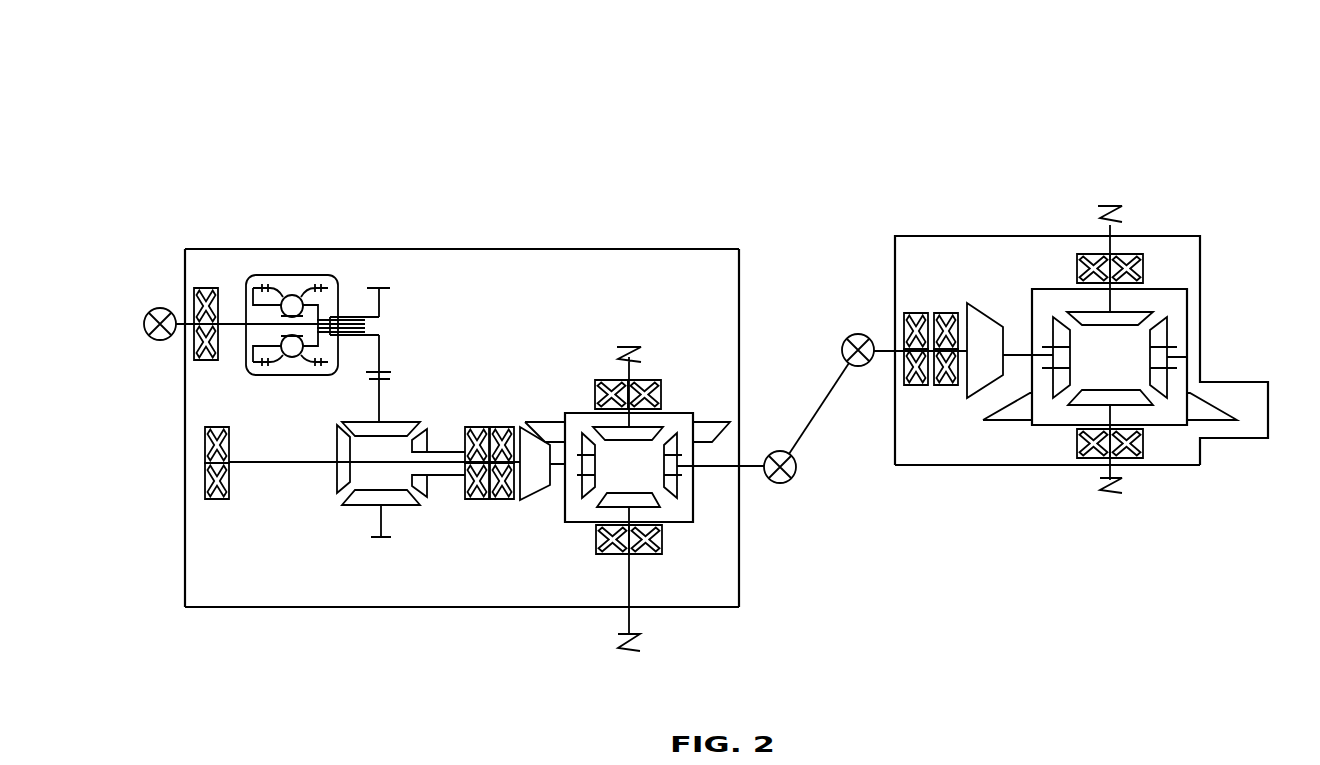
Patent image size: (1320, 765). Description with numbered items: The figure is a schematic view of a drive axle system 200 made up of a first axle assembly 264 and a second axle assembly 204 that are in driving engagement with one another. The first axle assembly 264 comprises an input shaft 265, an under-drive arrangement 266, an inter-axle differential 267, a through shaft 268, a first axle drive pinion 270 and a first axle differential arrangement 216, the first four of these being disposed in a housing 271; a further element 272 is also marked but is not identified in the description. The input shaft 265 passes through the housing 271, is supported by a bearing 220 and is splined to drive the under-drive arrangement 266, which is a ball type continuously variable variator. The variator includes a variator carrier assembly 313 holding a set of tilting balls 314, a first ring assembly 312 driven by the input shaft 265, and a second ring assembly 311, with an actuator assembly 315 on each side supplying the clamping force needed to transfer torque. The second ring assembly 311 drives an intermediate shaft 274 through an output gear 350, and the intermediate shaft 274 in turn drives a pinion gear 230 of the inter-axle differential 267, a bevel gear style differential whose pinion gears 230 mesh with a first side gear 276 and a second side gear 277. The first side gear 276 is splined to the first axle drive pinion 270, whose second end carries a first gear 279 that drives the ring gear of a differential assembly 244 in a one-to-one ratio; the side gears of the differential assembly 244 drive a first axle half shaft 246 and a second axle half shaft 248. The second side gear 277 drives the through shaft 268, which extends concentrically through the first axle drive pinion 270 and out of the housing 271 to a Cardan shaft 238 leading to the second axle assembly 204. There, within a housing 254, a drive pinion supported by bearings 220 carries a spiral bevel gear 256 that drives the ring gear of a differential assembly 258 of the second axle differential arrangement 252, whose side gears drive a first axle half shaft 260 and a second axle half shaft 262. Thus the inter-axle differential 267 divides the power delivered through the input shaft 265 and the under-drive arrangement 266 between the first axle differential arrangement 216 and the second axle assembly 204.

The drive axle system 200 is at (815, 90).
The second axle assembly 204 is at (917, 225).
The first axle differential arrangement 216 is at (698, 598).
The bearing 220 is at (502, 427).
The pinion gear 230 is at (402, 422).
The Cardan shaft 238 is at (813, 418).
The differential assembly 244 is at (706, 512).
The first axle half shaft 246 is at (625, 624).
The second axle half shaft 248 is at (627, 373).
The second axle differential arrangement 252 is at (1020, 252).
The housing 254 is at (933, 466).
The spiral bevel gear 256 is at (986, 315).
The differential assembly 258 is at (1190, 332).
The first axle half shaft 260 is at (1102, 477).
The second axle half shaft 262 is at (1115, 226).
The first axle assembly 264 is at (600, 236).
The input shaft 265 is at (172, 337).
The under-drive arrangement 266 is at (206, 256).
The inter-axle differential 267 is at (381, 600).
The through shaft 268 is at (285, 463).
The first axle drive pinion 270 is at (458, 476).
The housing 271 is at (740, 578).
The housing wall 272 is at (200, 264).
The intermediate shaft 274 is at (379, 396).
The first side gear 276 is at (428, 438).
The second side gear 277 is at (333, 494).
The first gear 279 is at (523, 501).
The second ring assembly 311 is at (337, 282).
The first ring assembly 312 is at (258, 277).
The variator carrier assembly 313 is at (272, 306).
The tilting balls 314 is at (289, 354).
The actuator assembly 315 is at (315, 280).
The output gear 350 is at (386, 306).